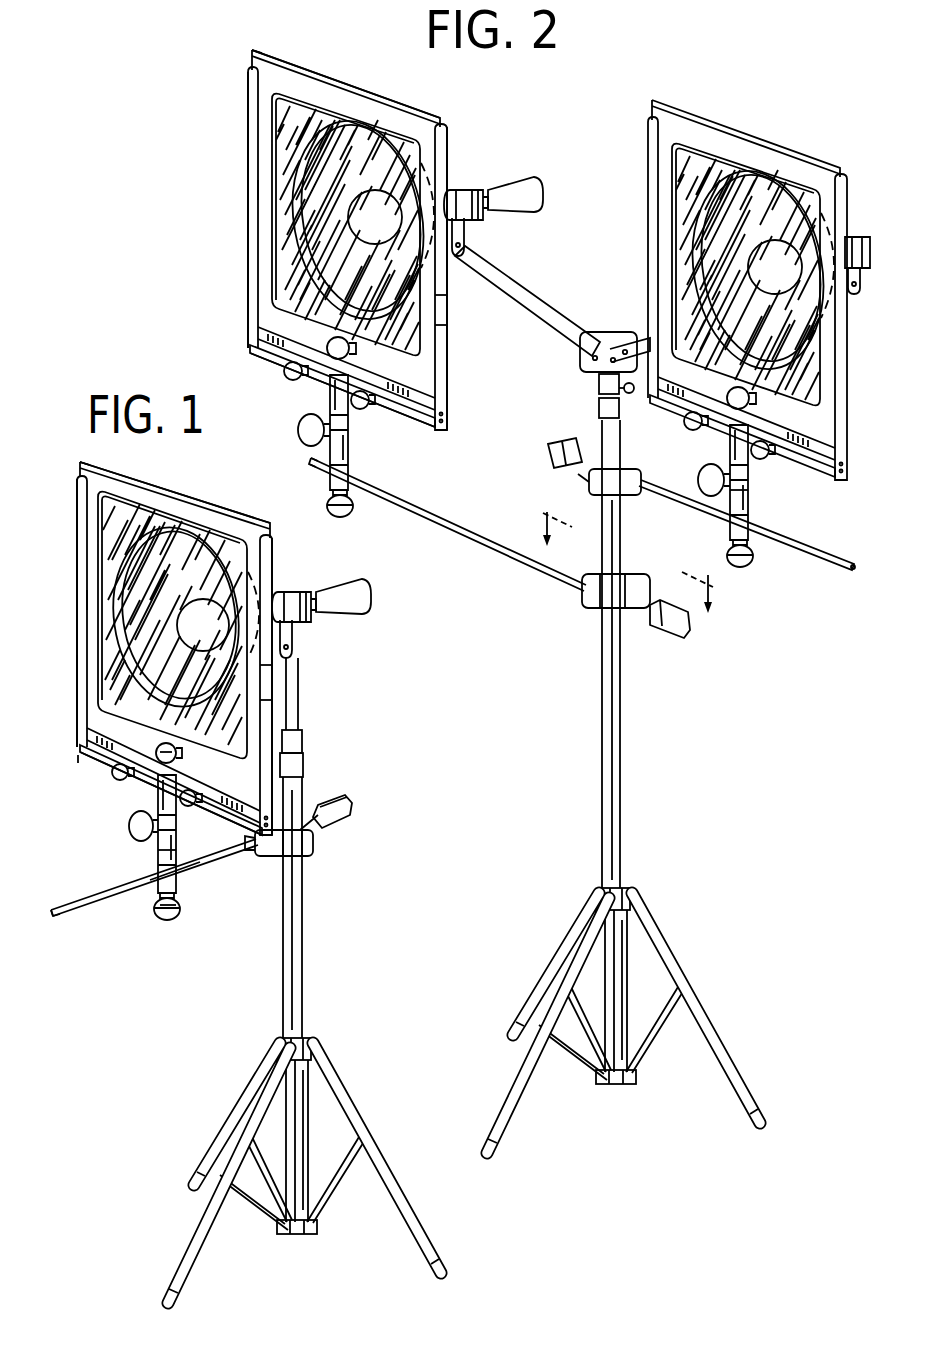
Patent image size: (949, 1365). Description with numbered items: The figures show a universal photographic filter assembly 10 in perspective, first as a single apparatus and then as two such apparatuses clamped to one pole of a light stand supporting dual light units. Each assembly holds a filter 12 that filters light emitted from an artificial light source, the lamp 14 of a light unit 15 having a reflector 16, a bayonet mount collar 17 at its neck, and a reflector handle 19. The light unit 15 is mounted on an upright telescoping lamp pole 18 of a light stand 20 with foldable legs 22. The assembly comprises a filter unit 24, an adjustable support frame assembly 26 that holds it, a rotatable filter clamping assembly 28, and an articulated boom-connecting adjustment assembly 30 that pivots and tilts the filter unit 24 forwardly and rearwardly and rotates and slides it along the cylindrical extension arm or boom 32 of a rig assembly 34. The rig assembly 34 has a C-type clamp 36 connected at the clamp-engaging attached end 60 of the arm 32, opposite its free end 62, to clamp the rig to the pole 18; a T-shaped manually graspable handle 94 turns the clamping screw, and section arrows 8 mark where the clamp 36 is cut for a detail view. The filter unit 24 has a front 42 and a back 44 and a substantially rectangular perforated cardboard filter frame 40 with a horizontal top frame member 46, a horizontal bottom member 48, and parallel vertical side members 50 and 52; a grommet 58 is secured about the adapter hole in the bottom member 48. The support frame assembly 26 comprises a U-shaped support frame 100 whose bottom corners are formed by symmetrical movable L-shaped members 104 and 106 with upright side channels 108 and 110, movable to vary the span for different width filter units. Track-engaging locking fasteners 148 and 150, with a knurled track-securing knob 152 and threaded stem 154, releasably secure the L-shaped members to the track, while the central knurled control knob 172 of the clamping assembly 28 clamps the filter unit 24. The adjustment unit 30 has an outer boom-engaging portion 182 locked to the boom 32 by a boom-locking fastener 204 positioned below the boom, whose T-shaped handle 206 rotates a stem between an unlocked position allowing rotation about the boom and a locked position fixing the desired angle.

In FIG. 2, the section line 8- 8 is at (630, 552).
In FIG. 2, the universal photographic filter assembly 10 is at (238, 345).
In FIG. 1, the universal photographic filter assembly 10 is at (69, 767).
In FIG. 2, the filter 12 is at (280, 130).
In FIG. 1, the filter 12 is at (105, 535).
In FIG. 2, the lamp 14 is at (372, 243).
In FIG. 1, the lamp 14 is at (192, 628).
In FIG. 2, the light unit 15 is at (466, 232).
In FIG. 1, the light unit 15 is at (298, 630).
In FIG. 2, the reflector 16 is at (392, 132).
In FIG. 1, the reflector 16 is at (215, 540).
In FIG. 2, the bayonet mount collar 17 is at (466, 186).
In FIG. 1, the bayonet mount collar 17 is at (295, 596).
In FIG. 2, the telescoping lamp pole 18 is at (622, 790).
In FIG. 1, the telescoping lamp pole 18 is at (305, 967).
In FIG. 2, the reflector handle 19 is at (545, 195).
In FIG. 1, the reflector handle 19 is at (368, 612).
In FIG. 2, the light stand 20 is at (625, 890).
In FIG. 1, the light stand 20 is at (327, 1037).
In FIG. 2, the foldable legs 22 is at (725, 1010).
In FIG. 1, the foldable legs 22 is at (317, 1173).
In FIG. 2, the filter unit 24 is at (266, 190).
In FIG. 1, the filter unit 24 is at (94, 584).
In FIG. 2, the adjustable support frame assembly 26 is at (249, 290).
In FIG. 1, the adjustable support frame assembly 26 is at (78, 701).
In FIG. 2, the rotatable filter clamping assembly 28 is at (368, 334).
In FIG. 1, the rotatable filter clamping assembly 28 is at (160, 768).
In FIG. 2, the articulated boom-connecting adjustment assembly 30 is at (357, 463).
In FIG. 1, the articulated boom-connecting adjustment assembly 30 is at (149, 865).
In FIG. 2, the extension arm 32 is at (790, 550).
In FIG. 1, the extension arm 32 is at (88, 915).
In FIG. 2, the rig assembly 34 is at (433, 501).
In FIG. 1, the rig assembly 34 is at (212, 874).
In FIG. 2, the C-type clamp 36 is at (588, 482).
In FIG. 1, the C-type clamp 36 is at (316, 840).
In FIG. 2, the filter frame 40 is at (250, 50).
In FIG. 1, the filter frame 40 is at (80, 461).
In FIG. 2, the front 42 is at (258, 228).
In FIG. 1, the front 42 is at (88, 618).
In FIG. 2, the back 44 is at (365, 90).
In FIG. 1, the back 44 is at (180, 496).
In FIG. 2, the top filter frame member 46 is at (270, 72).
In FIG. 1, the top filter frame member 46 is at (110, 481).
In FIG. 2, the bottom filter frame member 48 is at (272, 318).
In FIG. 1, the bottom filter frame member 48 is at (100, 718).
In FIG. 2, the side frame member 50 is at (258, 158).
In FIG. 1, the side frame member 50 is at (88, 563).
In FIG. 2, the side frame member 52 is at (448, 330).
In FIG. 1, the side frame member 52 is at (262, 700).
In FIG. 2, the grommet 58 is at (348, 350).
In FIG. 1, the grommet 58 is at (180, 748).
In FIG. 2, the clamp-engaging attached end 60 is at (582, 590).
In FIG. 1, the clamp-engaging attached end 60 is at (258, 858).
In FIG. 2, the free end 62 is at (308, 462).
In FIG. 1, the free end 62 is at (54, 916).
In FIG. 2, the handle 94 is at (676, 640).
In FIG. 1, the handle 94 is at (348, 800).
In FIG. 2, the support frame 100 is at (453, 303).
In FIG. 1, the support frame 100 is at (273, 672).
In FIG. 1, the L-shaped support frame member 104 is at (82, 745).
In FIG. 2, the L-shaped support frame member 106 is at (448, 398).
In FIG. 1, the L-shaped support frame member 106 is at (296, 814).
In FIG. 1, the side channel 108 is at (80, 664).
In FIG. 2, the side channel 110 is at (450, 383).
In FIG. 1, the side channel 110 is at (268, 558).
In FIG. 2, the track-engaging locking fastener 148 is at (676, 431).
In FIG. 2, the track-engaging locking fastener 150 is at (775, 472).
In FIG. 2, the track-securing knob 152 is at (290, 370).
In FIG. 1, the track-securing knob 152 is at (118, 779).
In FIG. 2, the threaded stem 154 is at (368, 406).
In FIG. 1, the threaded stem 154 is at (190, 806).
In FIG. 2, the control knob 172 is at (747, 364).
In FIG. 1, the control knob 172 is at (162, 742).
In FIG. 2, the boom-engaging portion 182 is at (772, 508).
In FIG. 1, the boom-engaging portion 182 is at (178, 886).
In FIG. 2, the boom-locking fastener 204 is at (759, 572).
In FIG. 1, the boom-locking fastener 204 is at (155, 912).
In FIG. 2, the handle 206 is at (350, 515).
In FIG. 1, the handle 206 is at (178, 926).